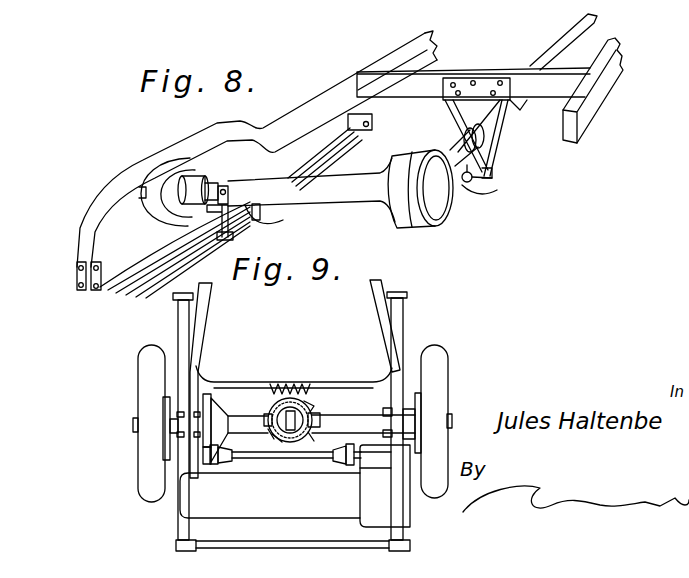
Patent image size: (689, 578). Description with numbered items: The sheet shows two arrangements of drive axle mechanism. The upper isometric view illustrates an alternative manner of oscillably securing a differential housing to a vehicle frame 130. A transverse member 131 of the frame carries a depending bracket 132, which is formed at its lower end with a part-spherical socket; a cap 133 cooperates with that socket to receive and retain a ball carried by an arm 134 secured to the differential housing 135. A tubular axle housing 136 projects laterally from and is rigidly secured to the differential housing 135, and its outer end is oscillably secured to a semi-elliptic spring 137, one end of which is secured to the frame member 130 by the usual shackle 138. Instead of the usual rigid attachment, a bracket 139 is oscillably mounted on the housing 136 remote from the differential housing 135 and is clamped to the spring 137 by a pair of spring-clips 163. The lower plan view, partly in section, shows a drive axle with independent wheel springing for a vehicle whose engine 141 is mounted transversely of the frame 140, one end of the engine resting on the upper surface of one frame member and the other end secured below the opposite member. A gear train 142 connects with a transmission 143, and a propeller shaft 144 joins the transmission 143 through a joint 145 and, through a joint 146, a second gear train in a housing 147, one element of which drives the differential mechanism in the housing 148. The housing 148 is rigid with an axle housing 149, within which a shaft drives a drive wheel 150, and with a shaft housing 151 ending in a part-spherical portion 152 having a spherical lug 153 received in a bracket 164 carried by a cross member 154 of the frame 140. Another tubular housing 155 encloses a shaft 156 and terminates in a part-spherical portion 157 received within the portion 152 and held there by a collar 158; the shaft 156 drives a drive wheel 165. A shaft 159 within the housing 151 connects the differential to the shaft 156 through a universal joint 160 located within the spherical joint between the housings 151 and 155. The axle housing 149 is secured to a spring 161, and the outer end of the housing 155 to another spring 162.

In FIG. 8, the vehicle frame 130 is at (340, 88).
In FIG. 8, the transverse member 131 is at (527, 72).
In FIG. 8, the depending bracket 132 is at (500, 135).
In FIG. 8, the cap 133 is at (485, 188).
In FIG. 8, the arm 134 is at (462, 185).
In FIG. 8, the differential housing 135 is at (417, 220).
In FIG. 8, the tubular axle housing 136 is at (367, 197).
In FIG. 8, the semi-elliptic spring 137 is at (162, 249).
In FIG. 8, the shackle 138 is at (78, 282).
In FIG. 8, the bracket 139 is at (231, 188).
In FIG. 8, the spring-clips 163 is at (270, 211).
In FIG. 9, the vehicle frame 140 is at (386, 320).
In FIG. 9, the engine 141 is at (190, 511).
In FIG. 9, the gear train 142 is at (403, 503).
In FIG. 9, the transmission 143 is at (378, 460).
In FIG. 9, the propeller shaft 144 is at (243, 460).
In FIG. 9, the joint 145 is at (343, 457).
In FIG. 9, the joint 146 is at (224, 459).
In FIG. 9, the housing 147 is at (207, 450).
In FIG. 9, the housing 148 is at (217, 413).
In FIG. 9, the axle housing 149 is at (176, 423).
In FIG. 9, the drive wheel 150 is at (145, 367).
In FIG. 9, the shaft housing 151 is at (240, 422).
In FIG. 9, the part-spherical portion 152 is at (282, 433).
In FIG. 9, the spherical lug 153 is at (293, 386).
In FIG. 9, the cross member 154 is at (360, 381).
In FIG. 9, the tubular housing 155 is at (368, 420).
In FIG. 9, the shaft 156 is at (315, 433).
In FIG. 9, the part-spherical portion 157 is at (313, 404).
In FIG. 9, the collar 158 is at (309, 403).
In FIG. 9, the shaft 159 is at (270, 433).
In FIG. 9, the universal joint 160 is at (274, 433).
In FIG. 9, the spring 161 is at (203, 326).
In FIG. 9, the spring 162 is at (404, 298).
In FIG. 9, the bracket 164 is at (277, 385).
In FIG. 9, the drive wheel 165 is at (437, 358).